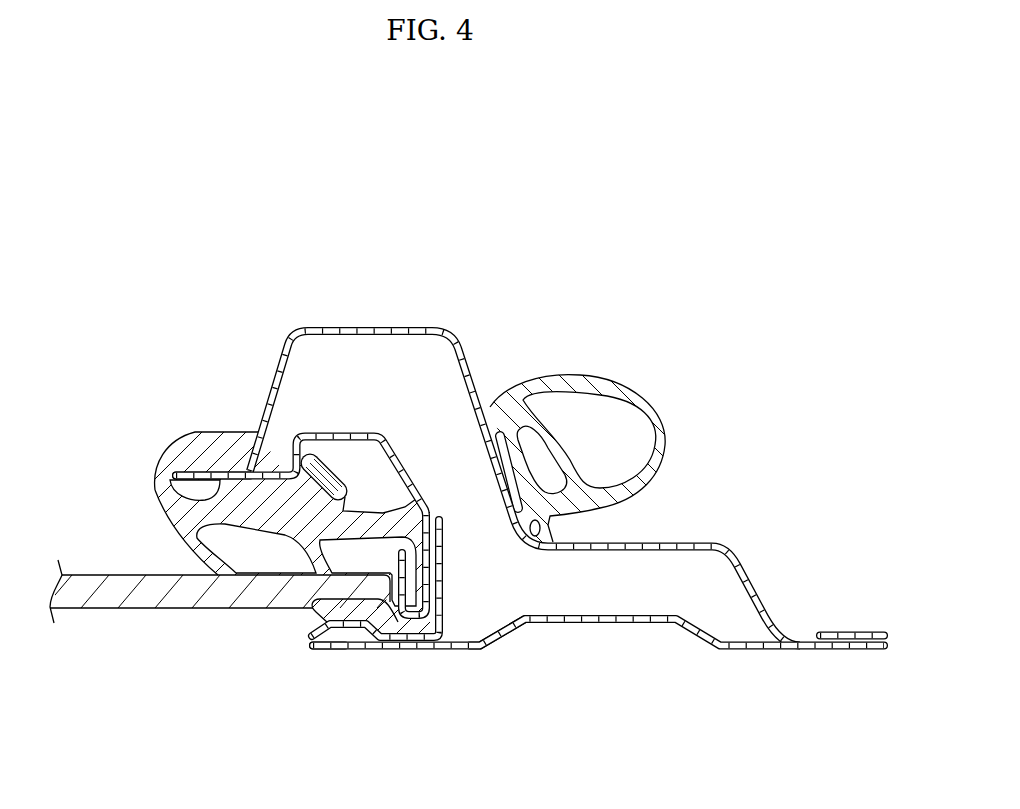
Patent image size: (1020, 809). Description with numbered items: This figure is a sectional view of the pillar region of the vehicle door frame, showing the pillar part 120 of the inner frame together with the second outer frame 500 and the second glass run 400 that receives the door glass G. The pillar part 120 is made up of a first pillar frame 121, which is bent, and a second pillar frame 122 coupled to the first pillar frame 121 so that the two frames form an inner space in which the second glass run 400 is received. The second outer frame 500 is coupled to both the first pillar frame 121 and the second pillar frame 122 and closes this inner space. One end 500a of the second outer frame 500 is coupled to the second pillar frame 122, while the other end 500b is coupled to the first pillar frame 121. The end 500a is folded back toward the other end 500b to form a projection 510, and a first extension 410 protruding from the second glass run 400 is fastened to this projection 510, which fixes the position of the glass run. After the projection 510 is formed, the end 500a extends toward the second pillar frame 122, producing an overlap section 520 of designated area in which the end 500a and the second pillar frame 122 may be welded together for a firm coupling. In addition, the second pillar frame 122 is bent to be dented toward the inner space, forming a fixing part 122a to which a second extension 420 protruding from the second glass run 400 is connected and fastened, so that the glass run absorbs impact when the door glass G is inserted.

The pillar part 120 is at (490, 224).
The first pillar frame 121 is at (433, 332).
The second pillar frame 122 is at (349, 432).
The fixing part 122a is at (257, 450).
The second glass run 400 is at (180, 513).
The first extension 410 is at (407, 628).
The second extension 420 is at (310, 458).
The second outer frame 500 is at (612, 620).
The one end of the second outer frame 500a is at (327, 647).
The other end of the second outer frame 500b is at (852, 643).
The projection 510 is at (307, 610).
The overlap section 520 is at (483, 640).
The door glass G is at (122, 608).